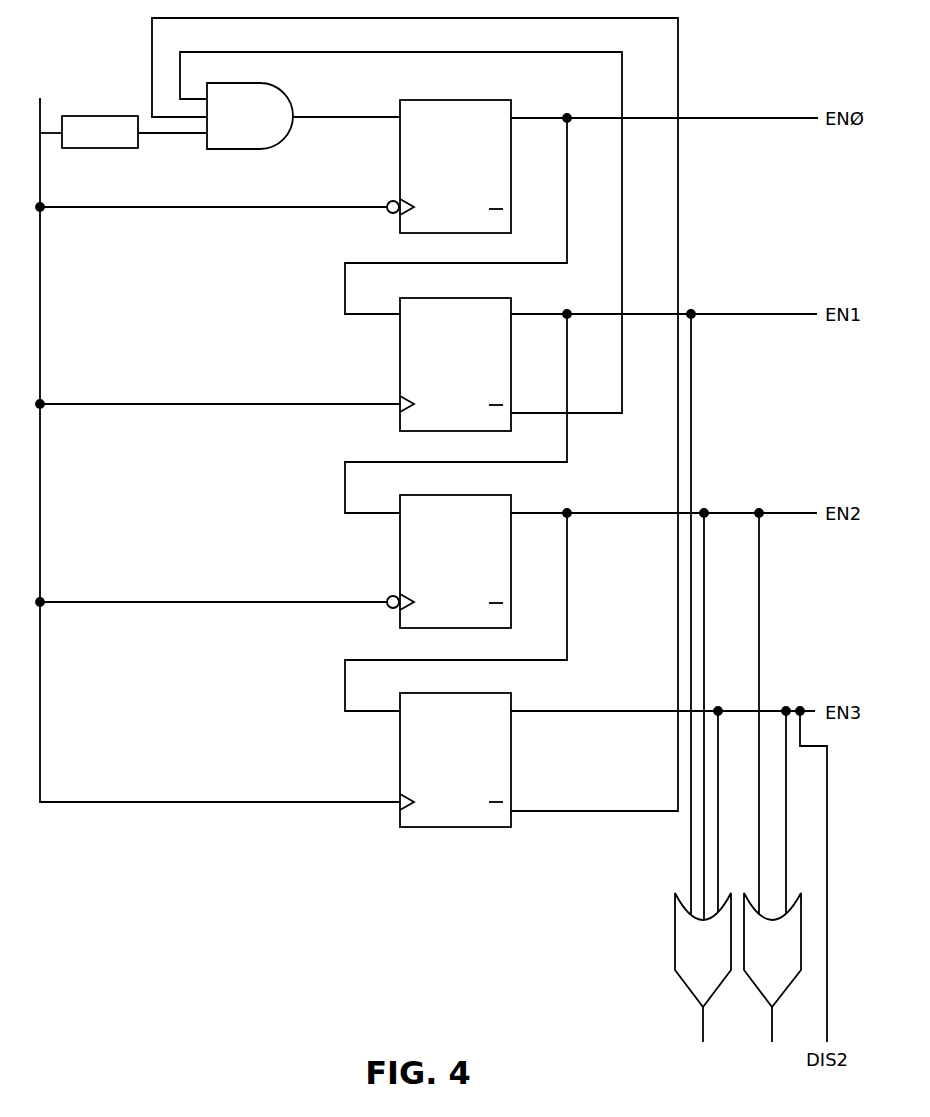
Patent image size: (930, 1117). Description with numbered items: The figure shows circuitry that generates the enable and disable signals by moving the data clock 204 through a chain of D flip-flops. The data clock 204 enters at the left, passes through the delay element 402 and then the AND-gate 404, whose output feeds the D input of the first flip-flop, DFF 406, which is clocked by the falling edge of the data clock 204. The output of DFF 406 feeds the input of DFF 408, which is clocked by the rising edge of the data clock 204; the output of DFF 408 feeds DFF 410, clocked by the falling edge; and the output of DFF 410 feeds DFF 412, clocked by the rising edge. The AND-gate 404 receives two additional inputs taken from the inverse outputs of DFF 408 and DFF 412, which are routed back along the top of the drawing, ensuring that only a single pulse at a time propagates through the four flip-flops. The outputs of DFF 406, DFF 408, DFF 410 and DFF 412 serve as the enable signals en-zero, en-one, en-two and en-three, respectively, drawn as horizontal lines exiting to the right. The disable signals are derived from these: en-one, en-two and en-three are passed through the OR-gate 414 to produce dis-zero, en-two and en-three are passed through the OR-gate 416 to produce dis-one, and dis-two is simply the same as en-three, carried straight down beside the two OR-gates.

The data clock 204 is at (206, 420).
The delay element 402 is at (82, 149).
The AND-gate 404 is at (415, 414).
The D flip-flop 406 is at (581, 207).
The D flip-flop 408 is at (581, 405).
The D flip-flop 410 is at (581, 603).
The D flip-flop 412 is at (607, 760).
The OR-gate 414 is at (703, 692).
The OR-gate 416 is at (772, 791).